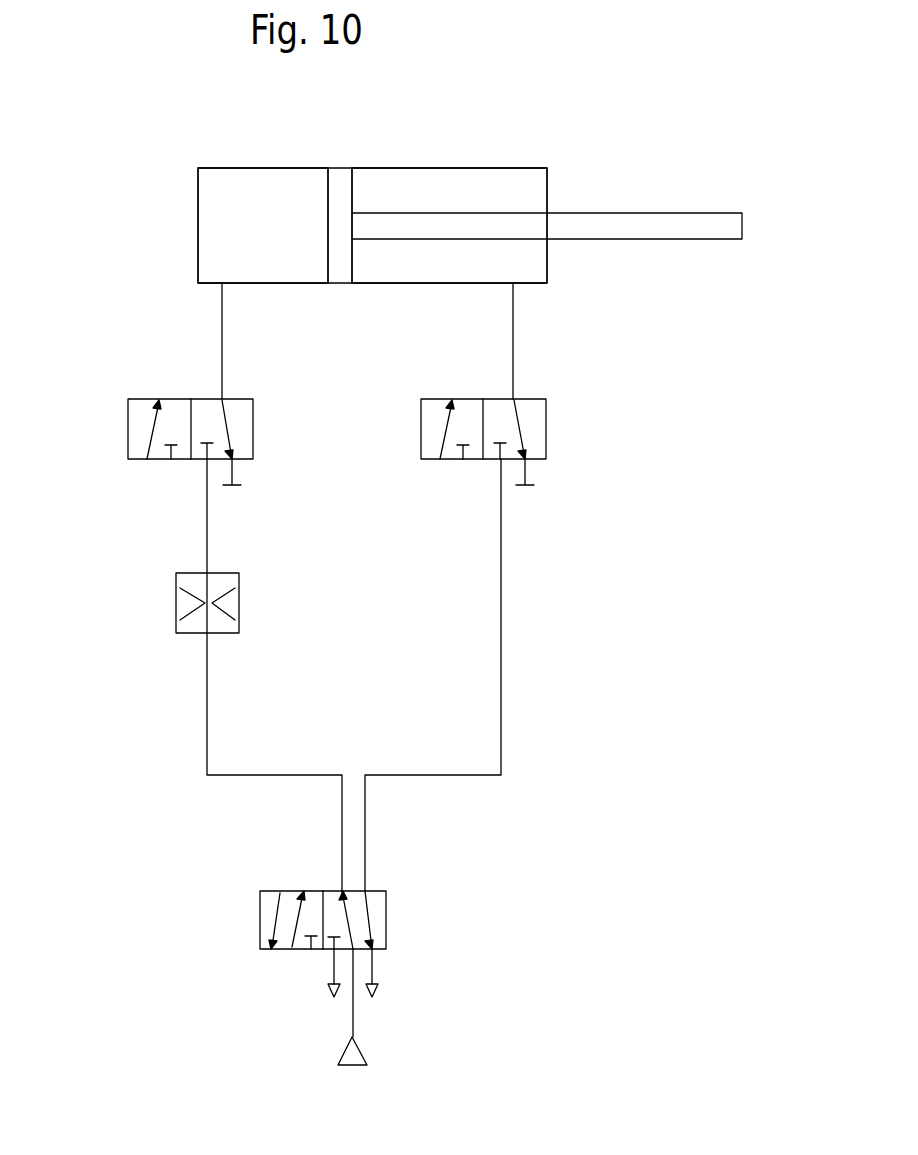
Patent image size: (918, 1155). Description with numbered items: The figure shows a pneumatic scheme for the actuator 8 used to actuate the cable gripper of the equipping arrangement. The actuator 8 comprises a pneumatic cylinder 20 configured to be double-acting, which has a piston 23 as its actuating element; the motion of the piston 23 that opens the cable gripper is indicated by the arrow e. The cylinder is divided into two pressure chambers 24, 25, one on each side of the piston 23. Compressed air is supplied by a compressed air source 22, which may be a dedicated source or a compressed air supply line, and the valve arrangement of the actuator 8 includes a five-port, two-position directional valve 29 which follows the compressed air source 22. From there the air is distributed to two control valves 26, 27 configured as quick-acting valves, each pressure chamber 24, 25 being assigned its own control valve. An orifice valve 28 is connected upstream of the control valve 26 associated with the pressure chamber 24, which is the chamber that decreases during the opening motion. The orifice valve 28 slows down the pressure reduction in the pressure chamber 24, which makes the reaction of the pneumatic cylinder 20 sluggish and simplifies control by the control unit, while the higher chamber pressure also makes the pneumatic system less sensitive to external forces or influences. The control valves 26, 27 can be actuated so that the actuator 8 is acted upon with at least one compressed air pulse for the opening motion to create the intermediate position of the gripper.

The pneumatic actuator 8 is at (112, 122).
The pneumatic cylinder 20 is at (435, 207).
The piston 23 is at (342, 185).
The pressure chamber 24 is at (213, 257).
The pressure chamber 25 is at (535, 267).
The arrow e is at (730, 200).
The control valve 26 is at (128, 440).
The control valve 27 is at (546, 436).
The orifice valve 28 is at (172, 628).
The 5/2-way valve 29 is at (260, 925).
The compressed air source 22 is at (362, 1052).